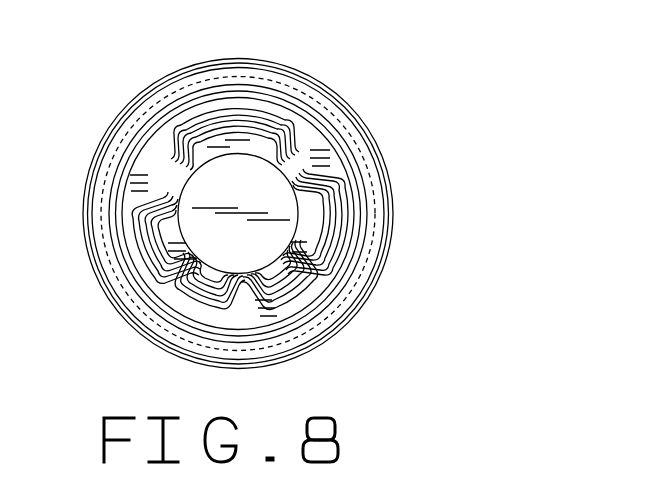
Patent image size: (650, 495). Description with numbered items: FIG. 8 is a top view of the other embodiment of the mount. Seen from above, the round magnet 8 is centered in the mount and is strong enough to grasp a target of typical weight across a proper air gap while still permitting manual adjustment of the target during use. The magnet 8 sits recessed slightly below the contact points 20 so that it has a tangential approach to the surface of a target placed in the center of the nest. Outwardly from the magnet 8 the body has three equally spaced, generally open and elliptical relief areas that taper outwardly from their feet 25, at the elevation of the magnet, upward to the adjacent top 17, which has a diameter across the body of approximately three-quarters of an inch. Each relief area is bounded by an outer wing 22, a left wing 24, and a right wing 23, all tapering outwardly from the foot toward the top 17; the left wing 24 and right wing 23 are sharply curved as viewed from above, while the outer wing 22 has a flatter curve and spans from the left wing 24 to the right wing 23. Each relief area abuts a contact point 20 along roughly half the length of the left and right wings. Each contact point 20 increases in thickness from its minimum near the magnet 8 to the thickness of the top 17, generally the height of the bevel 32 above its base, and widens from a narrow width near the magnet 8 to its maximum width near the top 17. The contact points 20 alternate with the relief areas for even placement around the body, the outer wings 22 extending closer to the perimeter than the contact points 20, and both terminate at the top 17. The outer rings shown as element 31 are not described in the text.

The magnet 8 is at (240, 248).
The top 17 is at (338, 150).
The contact point 20 is at (327, 160).
The outer wing 22 is at (240, 118).
The right wing 23 is at (270, 128).
The left wing 24 is at (177, 147).
The foot 25 is at (223, 145).
The outer jacket 31 is at (383, 172).
The bevel 32 is at (362, 242).